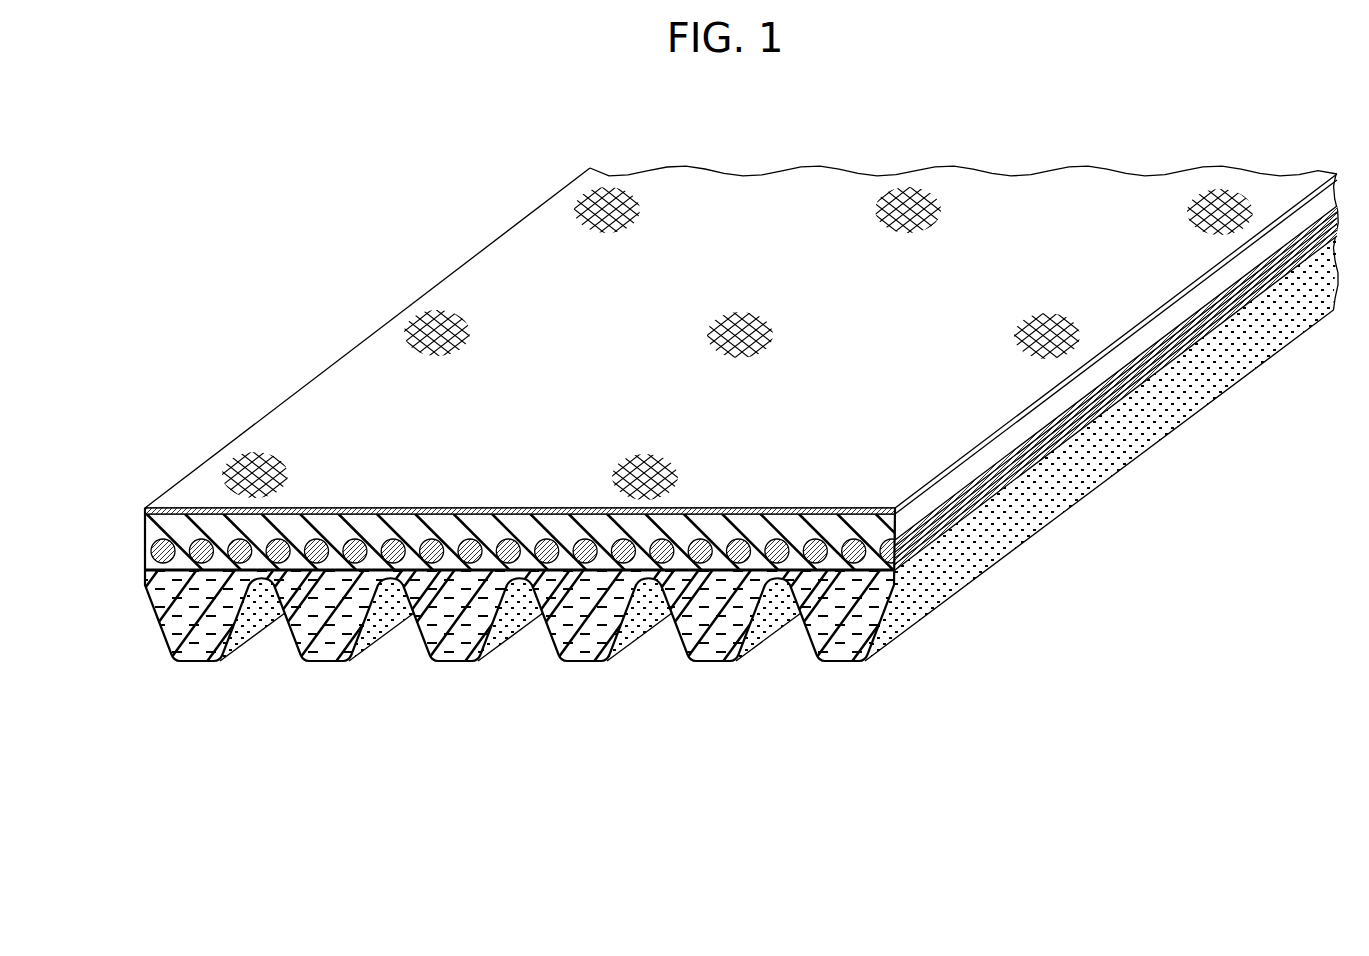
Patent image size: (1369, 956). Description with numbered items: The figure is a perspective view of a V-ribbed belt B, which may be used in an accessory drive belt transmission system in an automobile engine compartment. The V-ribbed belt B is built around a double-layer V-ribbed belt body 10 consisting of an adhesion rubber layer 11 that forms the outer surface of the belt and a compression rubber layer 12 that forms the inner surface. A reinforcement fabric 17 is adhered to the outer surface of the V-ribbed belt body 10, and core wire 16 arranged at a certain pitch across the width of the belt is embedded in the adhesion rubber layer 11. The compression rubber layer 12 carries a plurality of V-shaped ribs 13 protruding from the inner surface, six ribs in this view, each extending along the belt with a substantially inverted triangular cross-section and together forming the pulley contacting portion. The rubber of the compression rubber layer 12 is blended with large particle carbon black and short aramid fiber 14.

The V-ribbed belt B is at (447, 191).
The V-ribbed belt body 10 is at (1139, 529).
The adhesion rubber layer 11 is at (895, 517).
The compression rubber layer 12 is at (870, 669).
The V-shaped ribs 13 is at (198, 668).
The short aramid fiber 14 is at (163, 631).
The core wire 16 is at (151, 549).
The reinforcement fabric 17 is at (166, 508).